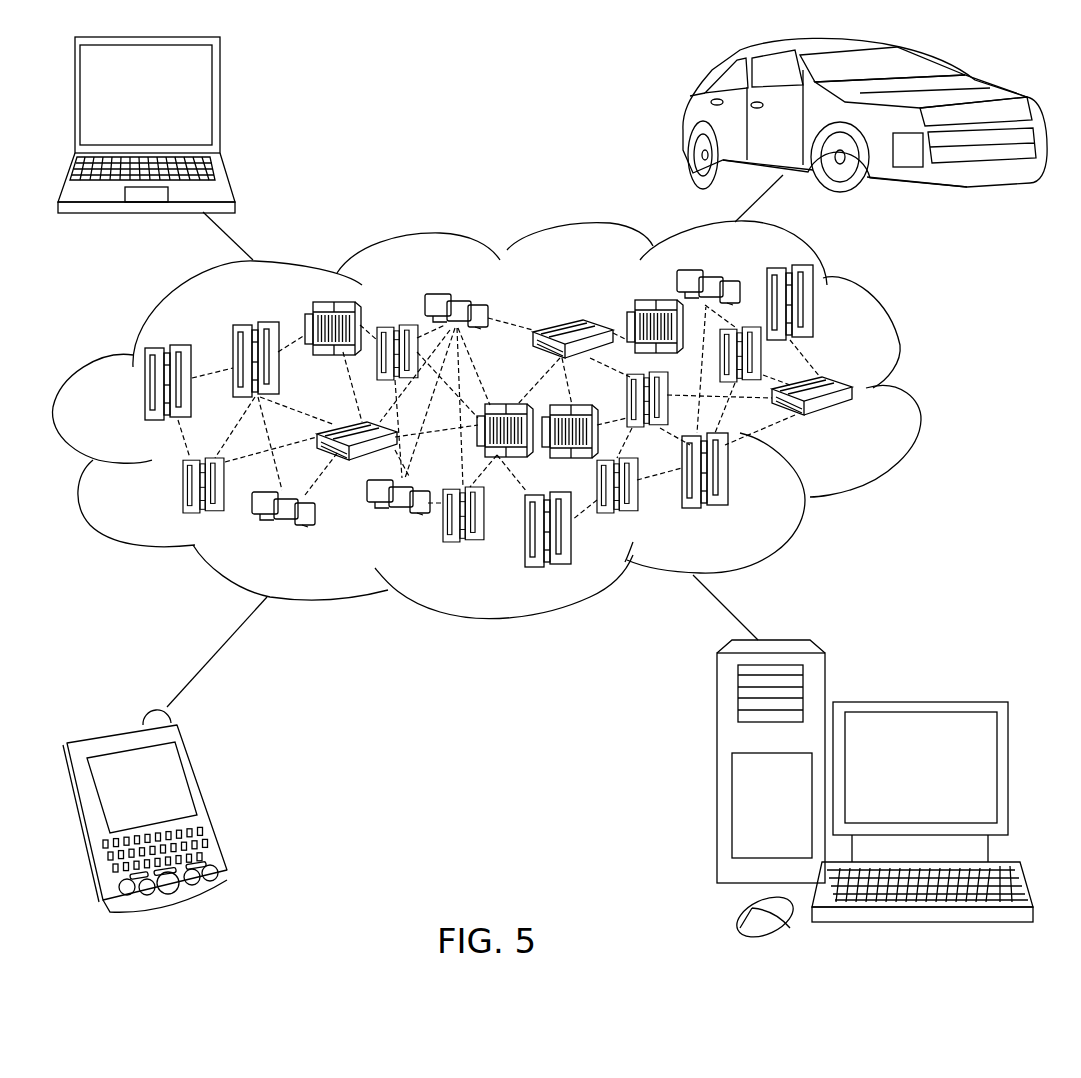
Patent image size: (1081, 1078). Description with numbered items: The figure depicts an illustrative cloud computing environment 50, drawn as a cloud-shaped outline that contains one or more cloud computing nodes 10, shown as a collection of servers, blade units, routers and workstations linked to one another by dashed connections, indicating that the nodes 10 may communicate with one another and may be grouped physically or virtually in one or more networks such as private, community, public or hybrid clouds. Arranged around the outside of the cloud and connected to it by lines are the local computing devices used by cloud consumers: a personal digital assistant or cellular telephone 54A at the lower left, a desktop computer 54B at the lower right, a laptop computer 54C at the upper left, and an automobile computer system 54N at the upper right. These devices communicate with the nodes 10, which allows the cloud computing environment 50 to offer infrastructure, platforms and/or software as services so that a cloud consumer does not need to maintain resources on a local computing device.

The cloud computing node 10 is at (866, 427).
The cloud computing environment 50 is at (918, 393).
The personal digital assistant (PDA) or cellular telephone 54A is at (212, 802).
The desktop computer 54B is at (918, 700).
The laptop computer 54C is at (218, 103).
The automobile computer system 54N is at (687, 122).